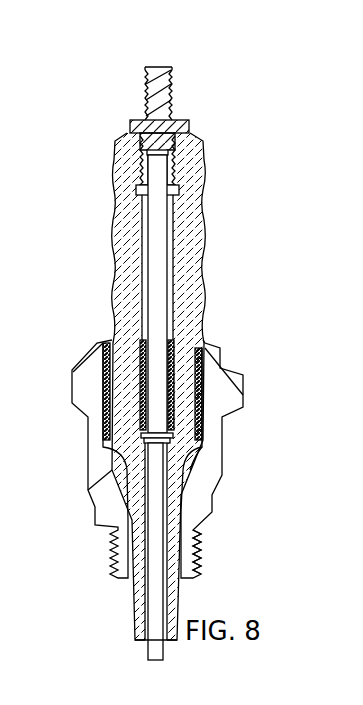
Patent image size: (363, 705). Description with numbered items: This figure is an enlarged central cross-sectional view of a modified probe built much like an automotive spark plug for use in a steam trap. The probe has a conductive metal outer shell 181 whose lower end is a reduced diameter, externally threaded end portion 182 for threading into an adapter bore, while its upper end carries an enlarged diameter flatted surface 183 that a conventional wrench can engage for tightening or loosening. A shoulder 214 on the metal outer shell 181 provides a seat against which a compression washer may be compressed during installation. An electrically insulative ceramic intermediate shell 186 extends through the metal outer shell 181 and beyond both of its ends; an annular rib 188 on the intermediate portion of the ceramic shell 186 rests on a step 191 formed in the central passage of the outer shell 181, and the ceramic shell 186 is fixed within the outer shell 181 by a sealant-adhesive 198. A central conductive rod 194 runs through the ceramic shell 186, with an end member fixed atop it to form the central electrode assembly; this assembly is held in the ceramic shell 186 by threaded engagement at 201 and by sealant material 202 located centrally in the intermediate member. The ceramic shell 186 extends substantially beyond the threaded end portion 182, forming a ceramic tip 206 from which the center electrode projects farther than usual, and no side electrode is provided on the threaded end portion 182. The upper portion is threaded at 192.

The terminal stud 192 is at (158, 68).
The threaded engagement 201 is at (130, 160).
The central conductive rod 194 is at (158, 210).
The ceramic intermediate shell 186 is at (115, 257).
The sealant material 202 is at (185, 292).
The sealant-adhesive 198 is at (205, 350).
The flatted surface 183 is at (82, 377).
The metal outer shell 181 is at (235, 387).
The annular rib 188 is at (105, 443).
The step 191 is at (205, 468).
The shoulder 214 is at (85, 508).
The externally threaded end portion 182 is at (198, 538).
The ceramic tip 206 is at (142, 588).